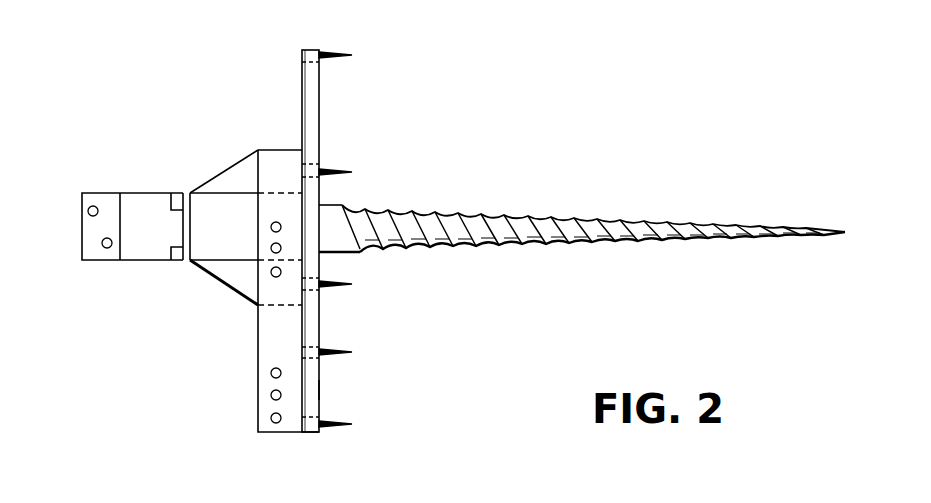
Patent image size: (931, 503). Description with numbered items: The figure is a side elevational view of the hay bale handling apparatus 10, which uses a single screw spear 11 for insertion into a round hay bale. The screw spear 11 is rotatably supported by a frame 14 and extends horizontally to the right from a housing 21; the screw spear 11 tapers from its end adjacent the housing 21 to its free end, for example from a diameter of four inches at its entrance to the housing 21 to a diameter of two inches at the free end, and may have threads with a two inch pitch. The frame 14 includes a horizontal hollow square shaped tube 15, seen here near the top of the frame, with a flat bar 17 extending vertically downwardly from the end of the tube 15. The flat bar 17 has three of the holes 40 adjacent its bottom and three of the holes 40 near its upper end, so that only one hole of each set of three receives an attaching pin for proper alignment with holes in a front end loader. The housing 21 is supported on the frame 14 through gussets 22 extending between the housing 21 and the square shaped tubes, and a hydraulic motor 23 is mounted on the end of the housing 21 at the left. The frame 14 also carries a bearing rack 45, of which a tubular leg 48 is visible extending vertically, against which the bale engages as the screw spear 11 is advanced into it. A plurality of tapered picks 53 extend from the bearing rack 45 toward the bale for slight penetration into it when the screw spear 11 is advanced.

The hay bale handling apparatus 10 is at (582, 205).
The screw spear 11 is at (456, 247).
The frame 14 is at (256, 330).
The horizontal hollow square shaped tube 15 is at (283, 148).
The flat bar 17 is at (262, 397).
The housing 21 is at (202, 224).
The gussets 22 is at (226, 172).
The hydraulic motor 23 is at (138, 193).
The holes 40 is at (270, 227).
The bearing rack 45 is at (321, 388).
The leg 48 is at (320, 117).
The picks 53 is at (350, 55).